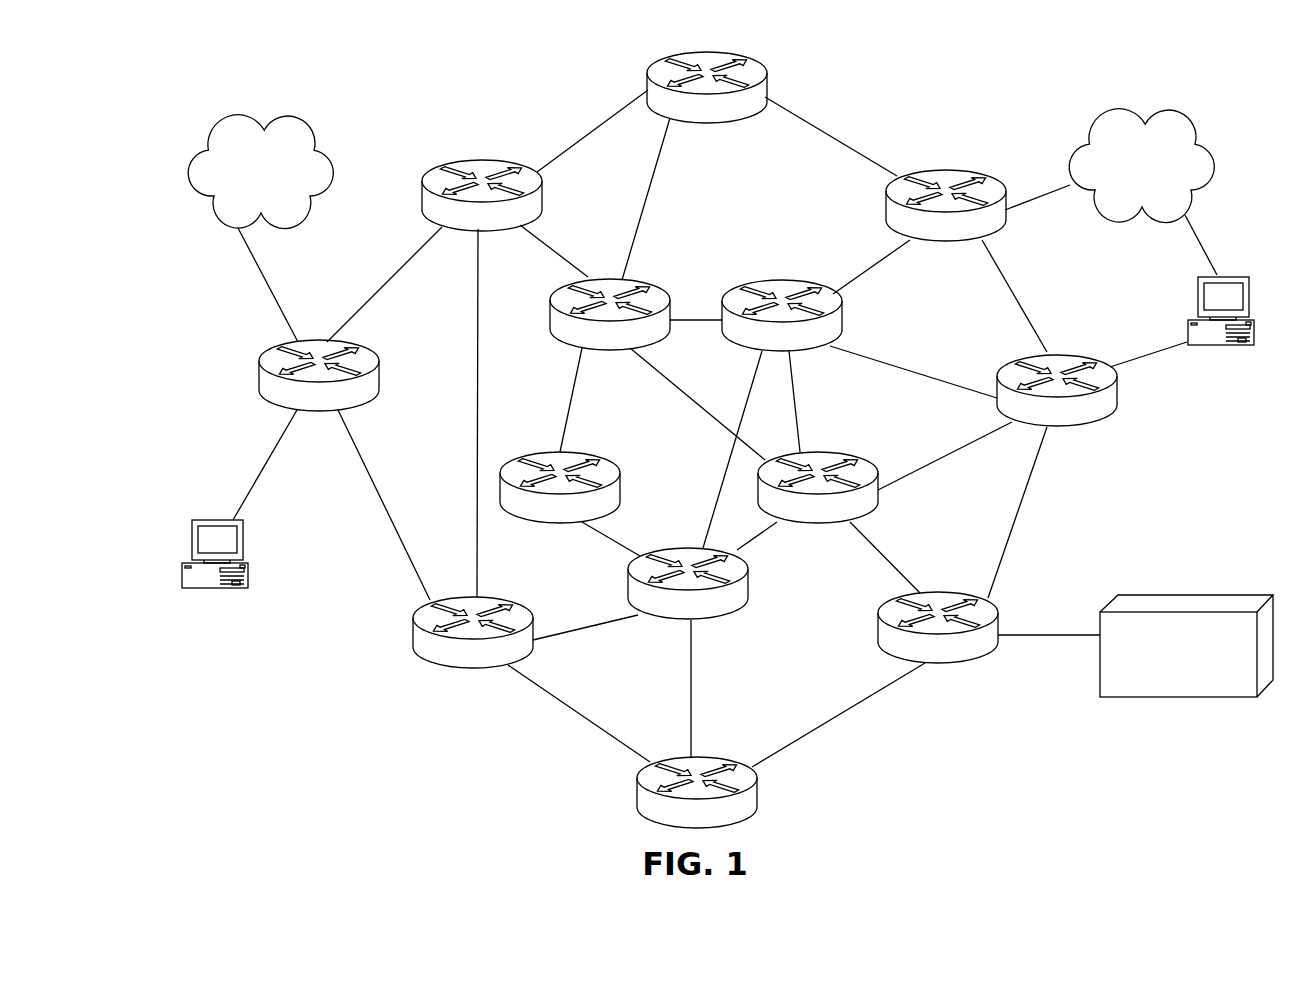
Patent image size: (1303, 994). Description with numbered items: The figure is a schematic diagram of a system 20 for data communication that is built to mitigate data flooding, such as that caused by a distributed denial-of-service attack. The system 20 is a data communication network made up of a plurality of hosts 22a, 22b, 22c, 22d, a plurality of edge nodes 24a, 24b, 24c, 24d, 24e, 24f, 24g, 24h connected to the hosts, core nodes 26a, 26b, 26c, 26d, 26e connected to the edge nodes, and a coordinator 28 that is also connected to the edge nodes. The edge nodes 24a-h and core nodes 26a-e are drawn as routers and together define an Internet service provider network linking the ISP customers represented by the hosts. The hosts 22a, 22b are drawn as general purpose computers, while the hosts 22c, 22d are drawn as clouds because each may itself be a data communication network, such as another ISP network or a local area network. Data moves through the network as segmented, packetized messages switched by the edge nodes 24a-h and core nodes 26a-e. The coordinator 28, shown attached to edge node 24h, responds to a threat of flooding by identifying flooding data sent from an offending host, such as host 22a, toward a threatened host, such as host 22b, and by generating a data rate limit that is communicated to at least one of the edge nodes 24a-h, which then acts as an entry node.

The system 20 is at (1034, 44).
The host 22a is at (182, 572).
The host 22b is at (1203, 345).
The host 22c is at (260, 172).
The host 22d is at (1141, 166).
The edge node 24a is at (638, 790).
The edge node 24b is at (416, 636).
The edge node 24c is at (262, 344).
The edge node 24d is at (424, 184).
The edge node 24e is at (650, 66).
The edge node 24f is at (950, 168).
The edge node 24g is at (1030, 356).
The edge node 24h is at (983, 658).
The core node 26a is at (725, 617).
The core node 26b is at (556, 452).
The core node 26c is at (550, 302).
The core node 26d is at (762, 281).
The core node 26e is at (828, 453).
The coordinator 28 is at (1186, 646).